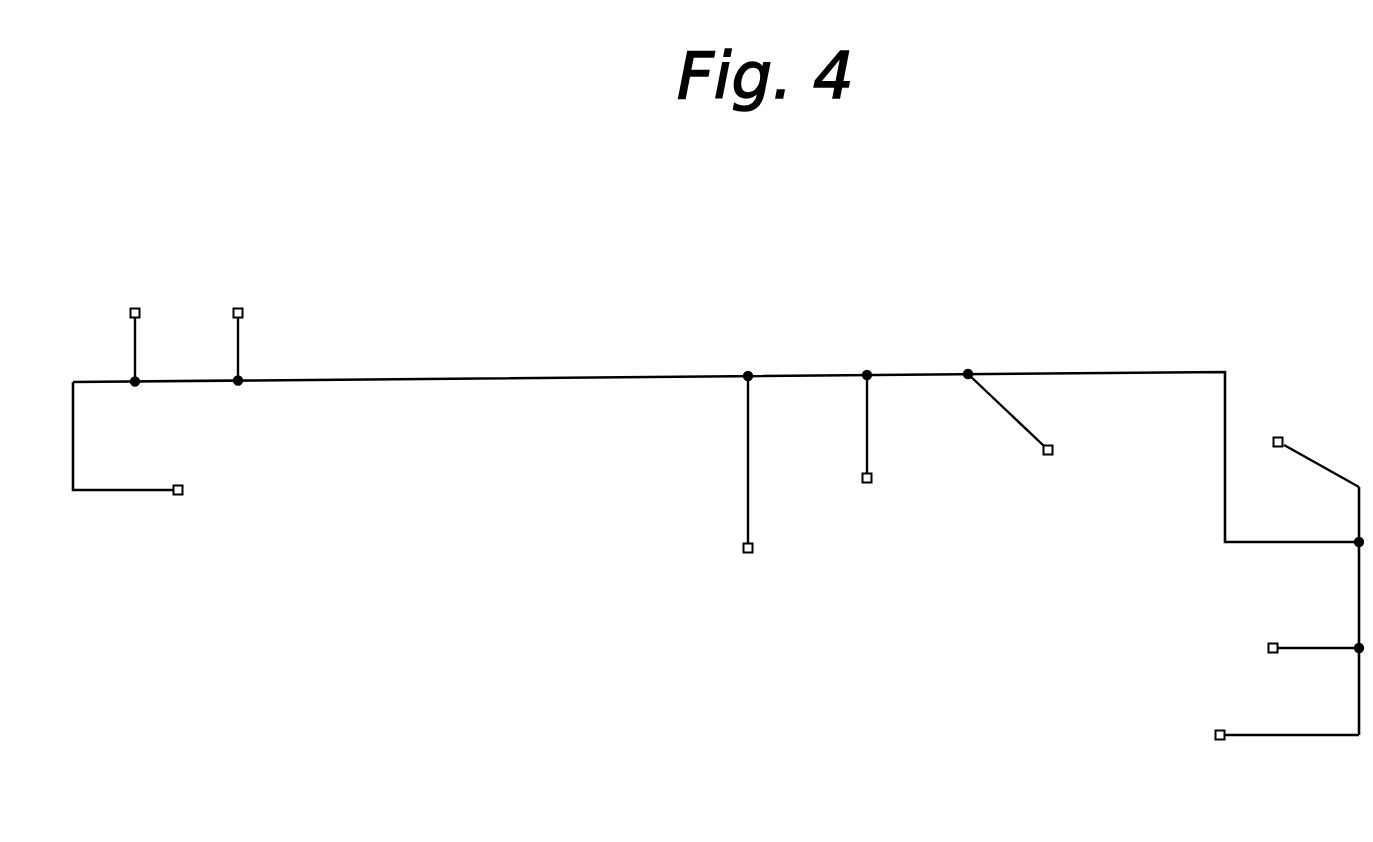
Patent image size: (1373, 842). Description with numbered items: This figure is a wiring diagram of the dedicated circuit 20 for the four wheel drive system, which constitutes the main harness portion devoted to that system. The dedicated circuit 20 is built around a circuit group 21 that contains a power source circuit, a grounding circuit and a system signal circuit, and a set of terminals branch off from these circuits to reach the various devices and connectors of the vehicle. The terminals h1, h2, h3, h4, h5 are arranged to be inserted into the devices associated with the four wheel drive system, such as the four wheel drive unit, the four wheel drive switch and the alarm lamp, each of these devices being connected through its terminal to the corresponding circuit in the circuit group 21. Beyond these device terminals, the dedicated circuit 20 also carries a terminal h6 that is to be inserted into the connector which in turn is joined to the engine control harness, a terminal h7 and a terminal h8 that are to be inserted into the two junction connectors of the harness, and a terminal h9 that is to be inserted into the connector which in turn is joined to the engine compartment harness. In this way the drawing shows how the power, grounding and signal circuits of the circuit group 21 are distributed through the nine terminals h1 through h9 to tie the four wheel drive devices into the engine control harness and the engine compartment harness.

The dedicated circuit 20 is at (457, 712).
The circuit group 21 is at (532, 377).
The terminal h1 is at (135, 455).
The terminal h2 is at (751, 481).
The terminal h3 is at (1014, 429).
The terminal h4 is at (1298, 649).
The terminal h5 is at (1267, 734).
The terminal h6 is at (132, 330).
The terminal h7 is at (236, 329).
The terminal h8 is at (869, 445).
The terminal h9 is at (1311, 474).